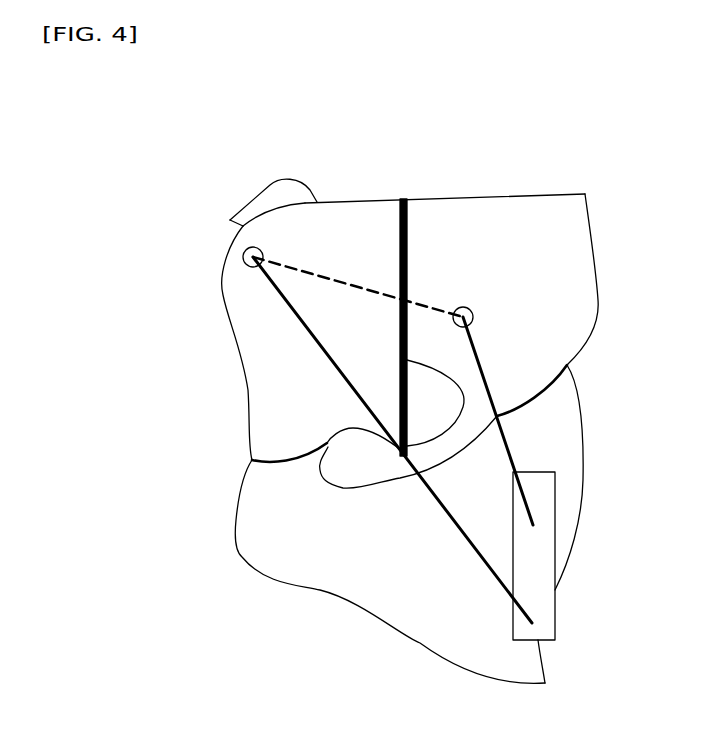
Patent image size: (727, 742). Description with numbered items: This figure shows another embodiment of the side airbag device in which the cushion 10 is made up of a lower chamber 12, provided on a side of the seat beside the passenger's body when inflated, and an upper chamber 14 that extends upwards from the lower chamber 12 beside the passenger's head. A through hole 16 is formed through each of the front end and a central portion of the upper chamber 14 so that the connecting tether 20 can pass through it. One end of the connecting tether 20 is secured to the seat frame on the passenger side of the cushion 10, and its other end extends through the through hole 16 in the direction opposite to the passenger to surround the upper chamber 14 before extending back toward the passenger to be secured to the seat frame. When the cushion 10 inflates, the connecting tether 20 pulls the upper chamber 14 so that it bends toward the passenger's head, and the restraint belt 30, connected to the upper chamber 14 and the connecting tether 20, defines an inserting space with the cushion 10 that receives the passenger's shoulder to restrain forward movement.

The cushion 10 is at (235, 360).
The lower chamber 12 is at (365, 573).
The upper chamber 14 is at (562, 244).
The through hole 16 is at (473, 315).
The connecting tether 20 is at (347, 380).
The restraint belt 30 is at (410, 247).